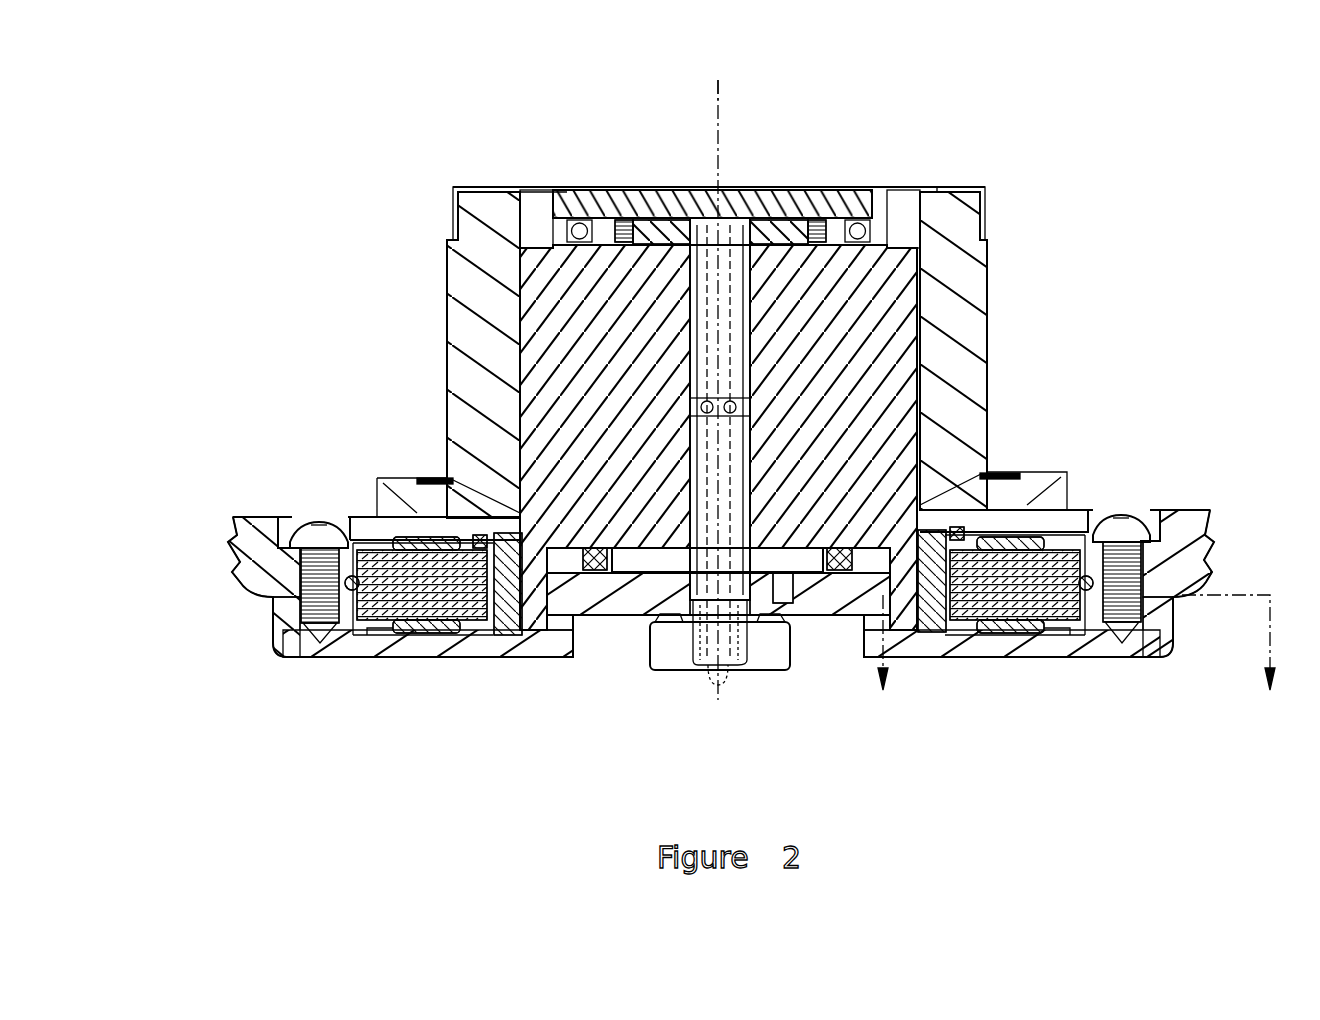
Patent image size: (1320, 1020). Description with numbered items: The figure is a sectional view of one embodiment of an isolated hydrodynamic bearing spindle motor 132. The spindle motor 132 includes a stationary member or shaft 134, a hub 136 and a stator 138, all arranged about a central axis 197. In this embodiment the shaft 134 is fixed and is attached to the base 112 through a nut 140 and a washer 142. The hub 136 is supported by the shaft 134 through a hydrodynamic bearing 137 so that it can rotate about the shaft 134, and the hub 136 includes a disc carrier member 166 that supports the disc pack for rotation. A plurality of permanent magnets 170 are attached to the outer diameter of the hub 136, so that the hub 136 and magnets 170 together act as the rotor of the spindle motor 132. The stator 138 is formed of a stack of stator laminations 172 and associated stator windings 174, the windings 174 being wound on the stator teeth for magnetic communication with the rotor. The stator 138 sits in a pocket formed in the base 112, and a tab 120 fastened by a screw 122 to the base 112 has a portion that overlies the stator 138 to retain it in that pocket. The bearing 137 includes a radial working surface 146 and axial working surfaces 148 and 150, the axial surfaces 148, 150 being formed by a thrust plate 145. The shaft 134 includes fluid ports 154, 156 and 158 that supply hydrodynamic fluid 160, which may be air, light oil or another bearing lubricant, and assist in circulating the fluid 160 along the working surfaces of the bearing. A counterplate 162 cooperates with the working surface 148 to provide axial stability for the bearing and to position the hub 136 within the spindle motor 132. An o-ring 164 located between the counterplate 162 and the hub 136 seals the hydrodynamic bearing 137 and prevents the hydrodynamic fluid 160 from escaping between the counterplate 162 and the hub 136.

The base 112 is at (557, 657).
The tab 120 is at (303, 590).
The screw 122 is at (305, 517).
The hydrodynamic bearing spindle motor 132 is at (997, 124).
The stationary member (shaft) 134 is at (783, 187).
The hub 136 is at (750, 330).
The hydrodynamic bearing 137 is at (690, 375).
The stator 138 is at (360, 517).
The nut 140 is at (680, 670).
The washer 142 is at (793, 605).
The thrust plate 145 is at (667, 187).
The radial working surface 146 is at (750, 368).
The axial working surface 148 is at (820, 187).
The axial working surface 150 is at (837, 187).
The fluid port 154 is at (700, 408).
The fluid port 156 is at (690, 450).
The fluid port 158 is at (727, 187).
The hydrodynamic fluid 160 is at (630, 187).
The counterplate 162 is at (590, 187).
The o-ring 164 is at (577, 187).
The disc carrier member 166 is at (987, 353).
The permanent magnets 170 is at (510, 640).
The stator laminations 172 is at (480, 640).
The stator windings 174 is at (425, 640).
The central axis 197 is at (718, 88).